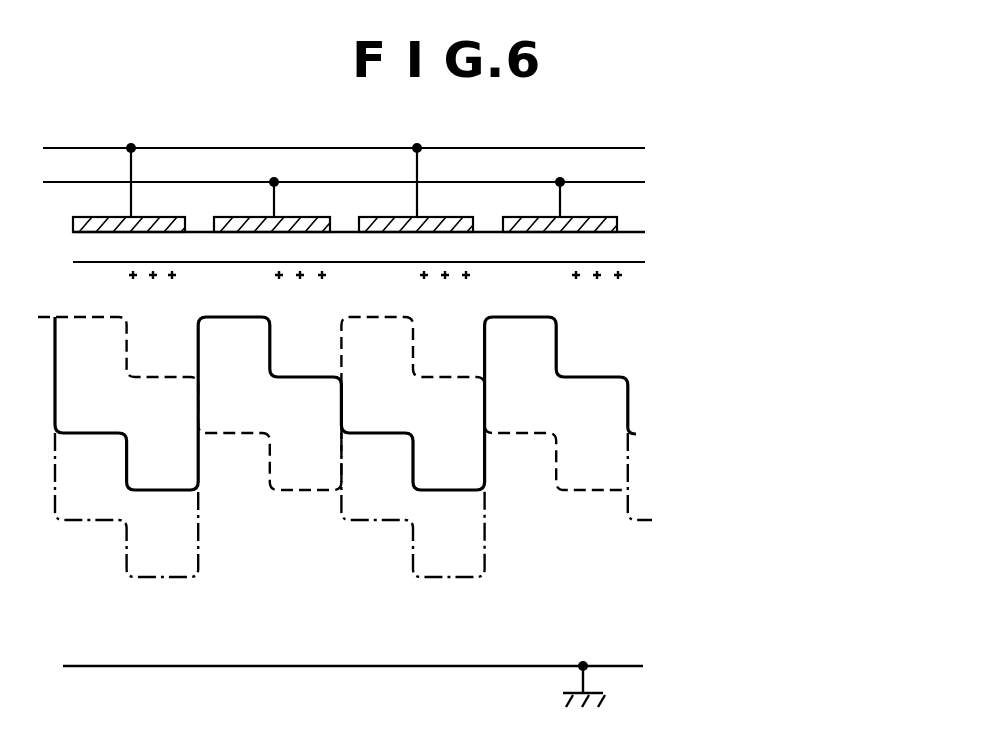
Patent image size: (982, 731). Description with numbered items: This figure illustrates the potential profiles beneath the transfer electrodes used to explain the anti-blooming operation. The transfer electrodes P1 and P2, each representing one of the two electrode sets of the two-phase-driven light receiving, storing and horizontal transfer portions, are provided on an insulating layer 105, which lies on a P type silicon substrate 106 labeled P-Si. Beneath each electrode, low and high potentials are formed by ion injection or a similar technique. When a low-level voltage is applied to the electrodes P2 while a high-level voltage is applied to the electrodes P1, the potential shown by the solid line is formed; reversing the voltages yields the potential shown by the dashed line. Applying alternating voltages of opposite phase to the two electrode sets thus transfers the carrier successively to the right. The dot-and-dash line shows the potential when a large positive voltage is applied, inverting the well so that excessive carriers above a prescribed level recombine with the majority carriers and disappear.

The insulating layer 105 is at (637, 248).
The P type silicon substrate 106 is at (613, 360).
The transfer electrode P1 is at (165, 217).
The transfer electrode P2 is at (305, 217).
The p-type silicon substrate P-Si is at (353, 667).